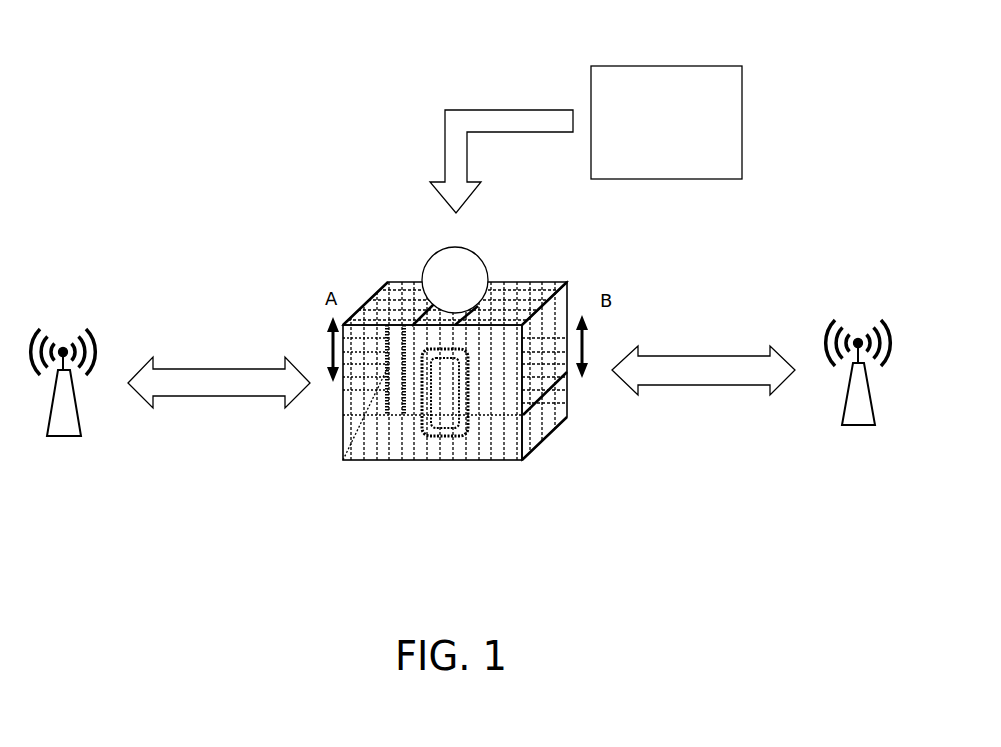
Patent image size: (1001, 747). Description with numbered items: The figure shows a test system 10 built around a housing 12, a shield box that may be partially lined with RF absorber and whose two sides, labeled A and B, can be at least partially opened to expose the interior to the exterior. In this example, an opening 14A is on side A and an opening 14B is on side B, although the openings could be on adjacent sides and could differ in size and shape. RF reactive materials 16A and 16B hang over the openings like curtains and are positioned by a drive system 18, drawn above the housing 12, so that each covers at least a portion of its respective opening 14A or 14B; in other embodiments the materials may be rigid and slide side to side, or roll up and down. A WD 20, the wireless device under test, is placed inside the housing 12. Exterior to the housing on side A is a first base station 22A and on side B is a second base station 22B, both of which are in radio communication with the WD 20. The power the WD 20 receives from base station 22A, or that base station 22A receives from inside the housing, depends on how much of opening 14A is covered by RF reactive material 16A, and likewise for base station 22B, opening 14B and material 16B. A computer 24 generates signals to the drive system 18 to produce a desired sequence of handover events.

The test system 10 is at (478, 88).
The housing 12 is at (572, 283).
The opening 14A is at (357, 419).
The opening 14B is at (543, 419).
The RF reactive material 16A is at (380, 302).
The RF reactive material 16B is at (508, 296).
The drive system 18 is at (455, 280).
The WD 20 is at (452, 406).
The first base station 22A is at (63, 399).
The second base station 22B is at (858, 391).
The computer 24 is at (666, 122).